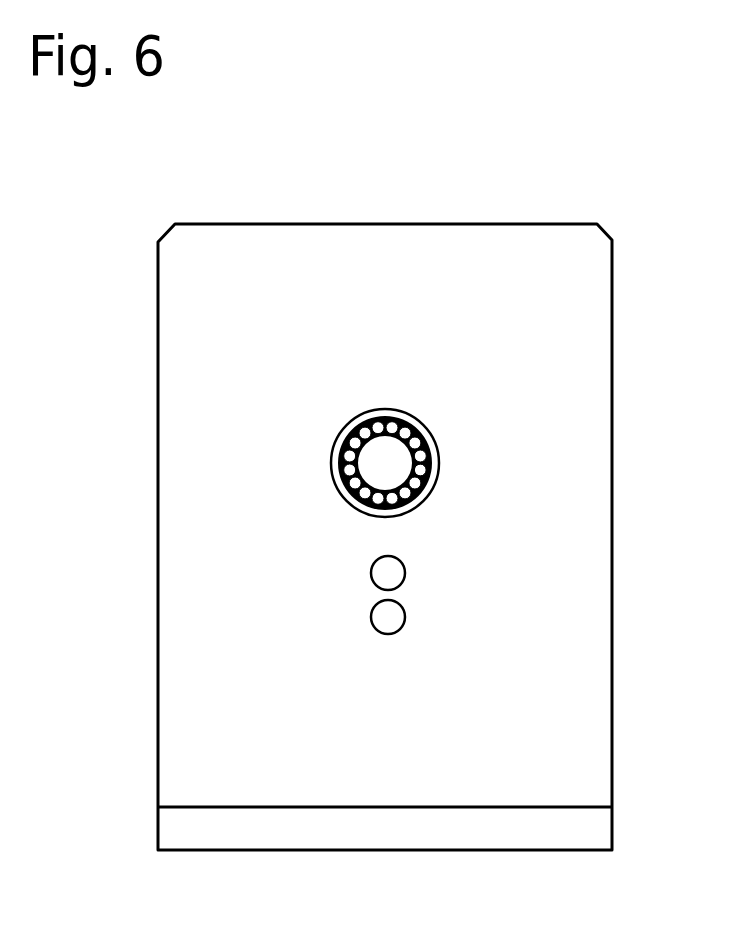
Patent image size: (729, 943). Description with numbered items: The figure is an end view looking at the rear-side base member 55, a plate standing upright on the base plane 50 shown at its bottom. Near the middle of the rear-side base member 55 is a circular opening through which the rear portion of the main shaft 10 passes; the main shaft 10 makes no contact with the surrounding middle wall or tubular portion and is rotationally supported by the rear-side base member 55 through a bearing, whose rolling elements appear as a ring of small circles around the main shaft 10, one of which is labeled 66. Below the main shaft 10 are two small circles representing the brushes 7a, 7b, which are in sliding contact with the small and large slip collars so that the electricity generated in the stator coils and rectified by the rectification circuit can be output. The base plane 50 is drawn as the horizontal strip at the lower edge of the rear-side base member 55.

The main shaft 10 is at (398, 450).
The ball 66 is at (440, 467).
The rear-side base member 55 is at (590, 527).
The brush 7b is at (405, 575).
The brush 7a is at (405, 627).
The base plane 50 is at (449, 833).